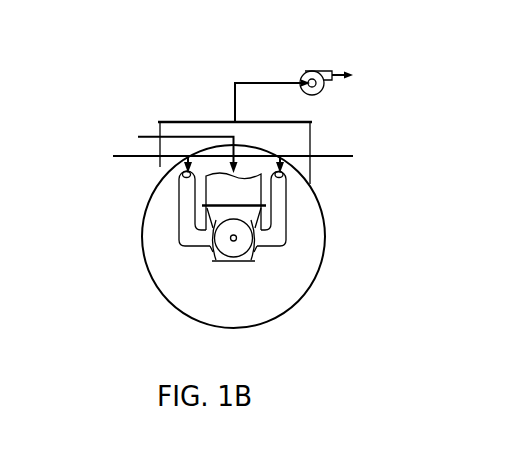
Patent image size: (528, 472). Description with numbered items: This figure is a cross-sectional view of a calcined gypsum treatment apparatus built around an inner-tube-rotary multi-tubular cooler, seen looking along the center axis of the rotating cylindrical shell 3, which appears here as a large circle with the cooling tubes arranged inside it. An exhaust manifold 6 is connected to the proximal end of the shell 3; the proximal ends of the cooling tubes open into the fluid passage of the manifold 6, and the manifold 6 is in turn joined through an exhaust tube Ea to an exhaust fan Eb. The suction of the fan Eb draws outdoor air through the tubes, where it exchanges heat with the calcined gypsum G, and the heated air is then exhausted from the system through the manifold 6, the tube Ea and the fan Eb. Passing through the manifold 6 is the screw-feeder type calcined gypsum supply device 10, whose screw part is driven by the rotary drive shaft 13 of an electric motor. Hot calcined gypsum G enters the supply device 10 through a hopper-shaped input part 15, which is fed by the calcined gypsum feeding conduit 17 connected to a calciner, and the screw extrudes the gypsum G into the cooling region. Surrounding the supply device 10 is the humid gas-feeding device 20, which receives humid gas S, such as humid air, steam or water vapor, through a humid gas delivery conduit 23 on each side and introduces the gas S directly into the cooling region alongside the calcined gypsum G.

The cylindrical shell 3 is at (323, 243).
The exhaust manifold 6 is at (310, 138).
The calcined gypsum supply device 10 is at (246, 266).
The rotary drive shaft 13 is at (234, 241).
The input part 15 is at (250, 218).
The calcined gypsum feeding conduit 17 is at (213, 196).
The humid gas-feeding device 20 is at (203, 256).
The humid gas delivery conduit 23 is at (183, 230).
The exhaust tube Ea is at (235, 92).
The exhaust fan Eb is at (313, 67).
The calcined gypsum G is at (178, 150).
The humid gas S is at (232, 159).